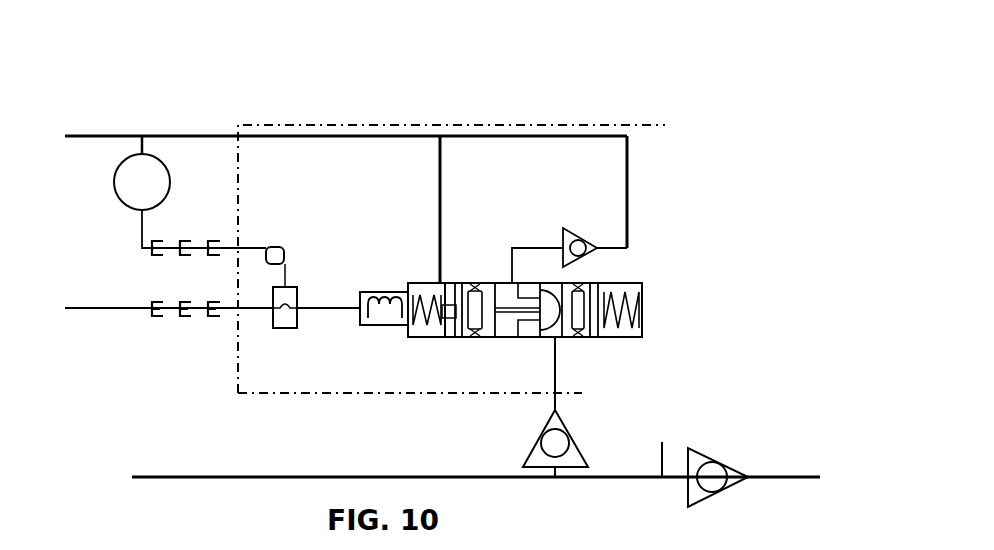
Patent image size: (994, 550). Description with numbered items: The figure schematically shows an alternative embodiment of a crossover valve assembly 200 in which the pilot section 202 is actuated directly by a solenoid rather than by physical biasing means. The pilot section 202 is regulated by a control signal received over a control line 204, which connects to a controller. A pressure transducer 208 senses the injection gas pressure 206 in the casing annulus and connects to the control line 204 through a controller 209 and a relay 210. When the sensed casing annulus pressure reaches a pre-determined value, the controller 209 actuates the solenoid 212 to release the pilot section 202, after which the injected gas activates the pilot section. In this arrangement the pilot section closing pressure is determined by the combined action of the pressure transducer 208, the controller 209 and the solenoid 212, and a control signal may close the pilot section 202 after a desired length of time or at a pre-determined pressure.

The crossover valve assembly 200 is at (490, 275).
The pilot section 202 is at (420, 285).
The control line 204 is at (117, 309).
The injection gas pressure 206 is at (253, 130).
The pressure transducer 208 is at (112, 158).
The controller 209 is at (275, 247).
The relay 210 is at (287, 342).
The solenoid 212 is at (377, 288).